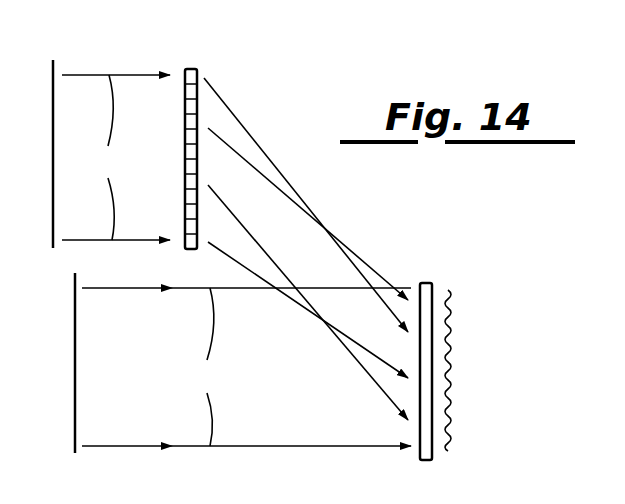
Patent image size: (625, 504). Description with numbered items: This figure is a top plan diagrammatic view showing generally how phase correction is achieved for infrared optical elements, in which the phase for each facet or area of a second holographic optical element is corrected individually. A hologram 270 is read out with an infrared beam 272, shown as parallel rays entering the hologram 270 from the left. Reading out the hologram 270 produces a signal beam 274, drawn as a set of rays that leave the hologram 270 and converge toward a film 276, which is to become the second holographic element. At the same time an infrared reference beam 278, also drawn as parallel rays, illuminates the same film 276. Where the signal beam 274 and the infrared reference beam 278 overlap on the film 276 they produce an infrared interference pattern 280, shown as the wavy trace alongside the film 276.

The hologram 270 is at (195, 63).
The infrared beam 272 is at (105, 157).
The signal beam 274 is at (323, 223).
The film 276 is at (427, 282).
The infrared reference beam 278 is at (203, 367).
The infrared interference pattern 280 is at (455, 377).